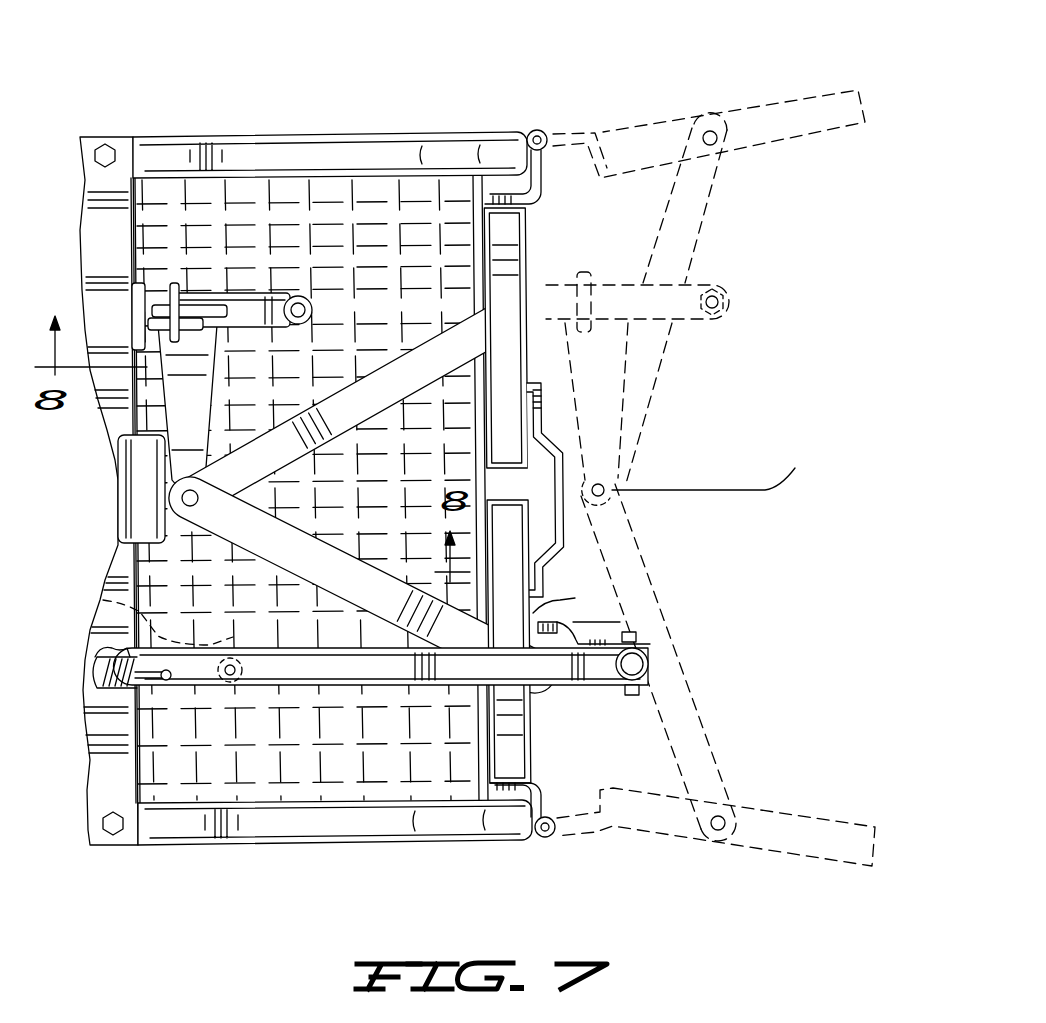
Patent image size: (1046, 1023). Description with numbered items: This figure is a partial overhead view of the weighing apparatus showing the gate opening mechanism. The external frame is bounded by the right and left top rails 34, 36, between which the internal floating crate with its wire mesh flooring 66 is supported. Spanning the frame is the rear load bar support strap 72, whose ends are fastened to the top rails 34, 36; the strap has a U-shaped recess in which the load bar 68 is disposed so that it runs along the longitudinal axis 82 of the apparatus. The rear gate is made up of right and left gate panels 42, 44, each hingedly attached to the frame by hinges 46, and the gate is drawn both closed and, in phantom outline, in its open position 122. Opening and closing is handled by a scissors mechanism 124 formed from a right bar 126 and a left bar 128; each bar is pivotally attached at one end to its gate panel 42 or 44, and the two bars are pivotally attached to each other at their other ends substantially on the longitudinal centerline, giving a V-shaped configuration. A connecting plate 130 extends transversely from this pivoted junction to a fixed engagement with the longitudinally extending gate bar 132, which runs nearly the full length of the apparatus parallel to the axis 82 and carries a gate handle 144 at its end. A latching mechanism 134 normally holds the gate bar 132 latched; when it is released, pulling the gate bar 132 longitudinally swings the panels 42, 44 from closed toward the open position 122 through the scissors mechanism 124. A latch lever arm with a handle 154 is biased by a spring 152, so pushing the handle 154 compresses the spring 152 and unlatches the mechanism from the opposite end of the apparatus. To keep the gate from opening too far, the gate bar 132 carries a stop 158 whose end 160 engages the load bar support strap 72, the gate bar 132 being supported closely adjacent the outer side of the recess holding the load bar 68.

The right top rail 34 is at (348, 846).
The left top rail 36 is at (322, 140).
The right gate panel 42 is at (520, 742).
The left gate panel 44 is at (530, 254).
The hinge 46 is at (532, 130).
The wire mesh flooring 66 is at (386, 239).
The load bar 68 is at (120, 502).
The rear load bar support strap 72 is at (125, 135).
The longitudinal axis 82 is at (706, 473).
The open position 122 is at (785, 101).
The scissors mechanism 124 is at (211, 532).
The right bar 126 is at (360, 605).
The left bar 128 is at (392, 372).
The connecting plate 130 is at (195, 410).
The gate bar 132 is at (247, 290).
The latching mechanism 134 is at (168, 285).
The gate handle 144 is at (300, 296).
The spring 152 is at (105, 700).
The handle 154 is at (165, 682).
The stop 158 is at (103, 600).
The end 160 is at (575, 598).